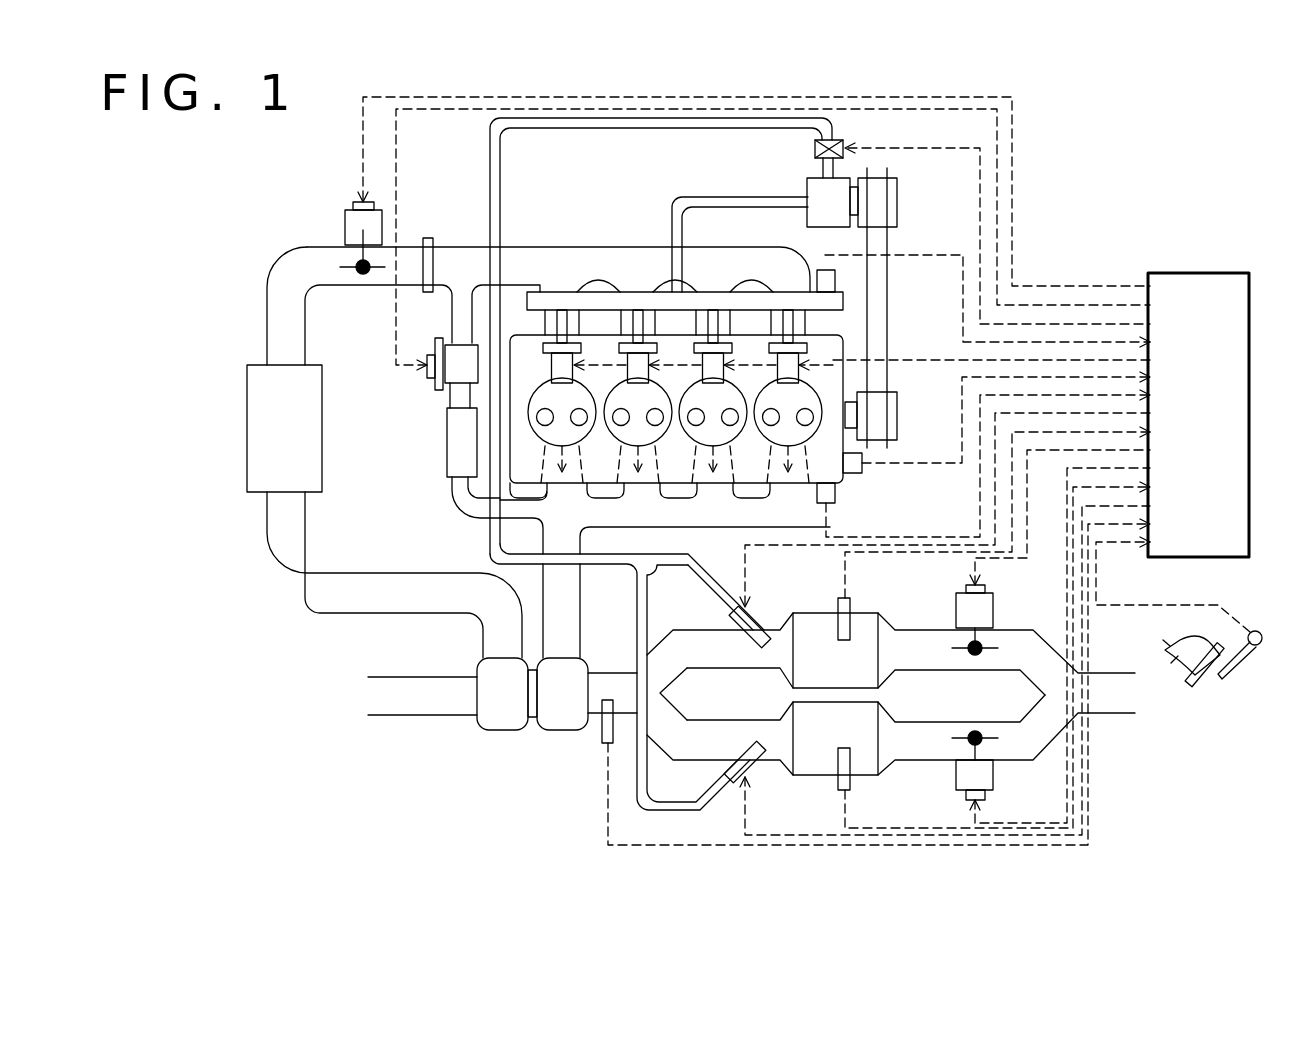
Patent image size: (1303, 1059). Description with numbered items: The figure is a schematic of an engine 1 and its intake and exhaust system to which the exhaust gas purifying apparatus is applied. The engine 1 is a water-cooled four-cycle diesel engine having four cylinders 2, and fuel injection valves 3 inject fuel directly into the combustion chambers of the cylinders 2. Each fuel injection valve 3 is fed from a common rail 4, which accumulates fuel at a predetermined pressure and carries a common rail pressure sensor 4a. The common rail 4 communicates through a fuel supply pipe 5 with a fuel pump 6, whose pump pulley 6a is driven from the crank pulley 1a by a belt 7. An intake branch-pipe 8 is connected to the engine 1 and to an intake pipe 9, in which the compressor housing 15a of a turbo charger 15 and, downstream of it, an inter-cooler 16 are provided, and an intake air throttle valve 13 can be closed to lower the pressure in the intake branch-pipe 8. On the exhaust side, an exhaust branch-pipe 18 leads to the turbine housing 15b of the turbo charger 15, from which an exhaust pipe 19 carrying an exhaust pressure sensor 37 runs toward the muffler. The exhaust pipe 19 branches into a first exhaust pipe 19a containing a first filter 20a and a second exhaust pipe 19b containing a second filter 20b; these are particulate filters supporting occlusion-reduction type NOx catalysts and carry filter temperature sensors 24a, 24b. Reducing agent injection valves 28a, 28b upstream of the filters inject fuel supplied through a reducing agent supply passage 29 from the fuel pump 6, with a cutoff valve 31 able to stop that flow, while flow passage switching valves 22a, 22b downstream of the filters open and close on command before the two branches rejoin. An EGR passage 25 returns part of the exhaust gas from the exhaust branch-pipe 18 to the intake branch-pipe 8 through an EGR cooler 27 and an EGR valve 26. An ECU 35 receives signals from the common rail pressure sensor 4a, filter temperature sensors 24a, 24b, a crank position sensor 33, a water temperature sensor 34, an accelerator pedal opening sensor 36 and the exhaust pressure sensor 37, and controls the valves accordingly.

The engine 1 is at (857, 482).
The crank pulley 1a is at (897, 415).
The cylinder 2 is at (676, 409).
The fuel injection valve 3 is at (552, 365).
The common rail 4 is at (827, 312).
The common rail pressure sensor 4a is at (825, 270).
The fuel supply pipe 5 is at (698, 198).
The fuel pump 6 is at (805, 187).
The pump pulley 6a is at (897, 200).
The belt 7 is at (888, 310).
The intake branch-pipe 8 is at (573, 245).
The intake pipe 9 is at (267, 313).
The intake air throttle valve 13 is at (345, 225).
The turbo charger 15 is at (595, 778).
The compressor housing 15a is at (498, 733).
The turbine housing 15b is at (573, 733).
The inter-cooler 16 is at (247, 390).
The exhaust branch-pipe 18 is at (585, 607).
The exhaust pipe 19 is at (608, 672).
The first exhaust pipe 19a is at (693, 628).
The second exhaust pipe 19b is at (727, 718).
The first filter 20a is at (890, 675).
The second filter 20b is at (918, 720).
The flow passage switching valve 22a is at (995, 605).
The flow passage switching valve 22b is at (995, 767).
The filter temperature sensor 24a is at (852, 597).
The filter temperature sensor 24b is at (837, 783).
The EGR passage 25 is at (450, 328).
The EGR valve 26 is at (430, 385).
The EGR cooler 27 is at (445, 460).
The reducing agent injection valve 28a is at (757, 615).
The reducing agent injection valve 28b is at (733, 765).
The reducing agent supply passage 29 is at (632, 130).
The cutoff valve 31 is at (813, 147).
The crank position sensor 33 is at (862, 465).
The water temperature sensor 34 is at (835, 495).
The ECU 35 is at (1228, 273).
The accelerator pedal opening sensor 36 is at (1255, 648).
The exhaust pressure sensor 37 is at (618, 780).